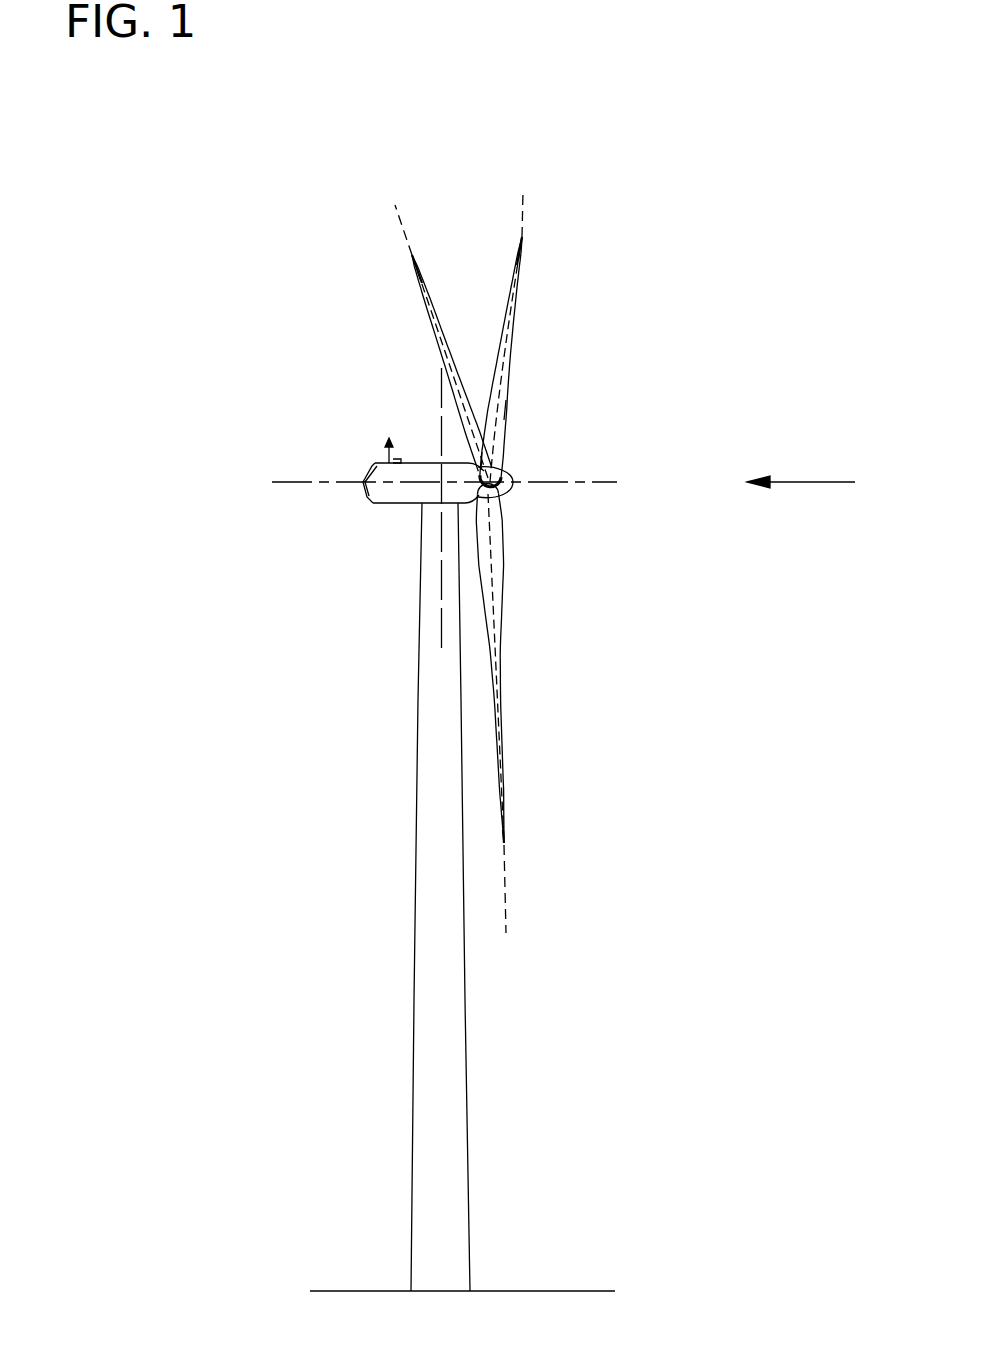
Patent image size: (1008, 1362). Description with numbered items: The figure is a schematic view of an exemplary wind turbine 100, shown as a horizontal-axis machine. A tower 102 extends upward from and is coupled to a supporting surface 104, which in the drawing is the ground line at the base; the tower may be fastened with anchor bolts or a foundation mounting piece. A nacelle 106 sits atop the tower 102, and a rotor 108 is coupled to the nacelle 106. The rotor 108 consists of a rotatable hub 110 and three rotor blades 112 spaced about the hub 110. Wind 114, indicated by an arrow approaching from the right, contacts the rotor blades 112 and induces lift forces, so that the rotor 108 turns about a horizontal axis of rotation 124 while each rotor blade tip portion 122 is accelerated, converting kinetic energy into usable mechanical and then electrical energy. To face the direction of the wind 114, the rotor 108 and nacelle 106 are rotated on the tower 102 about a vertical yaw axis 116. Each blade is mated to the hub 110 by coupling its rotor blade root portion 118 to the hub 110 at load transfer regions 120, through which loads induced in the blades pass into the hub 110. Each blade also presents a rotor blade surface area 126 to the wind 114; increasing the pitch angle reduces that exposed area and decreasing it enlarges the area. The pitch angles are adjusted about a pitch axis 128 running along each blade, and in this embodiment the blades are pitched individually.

The wind turbine 100 is at (195, 267).
The tower 102 is at (414, 1057).
The supporting surface 104 is at (368, 1291).
The nacelle 106 is at (392, 503).
The rotor 108 is at (525, 375).
The rotatable hub 110 is at (503, 473).
The rotor blades 112 is at (445, 355).
The wind 114 is at (823, 482).
The yaw axis 116 is at (437, 408).
The rotor blade root portion 118 is at (497, 560).
The load transfer regions 120 is at (493, 467).
The rotor blade tip portion 122 is at (413, 268).
The axis of rotation 124 is at (578, 483).
The rotor blade surface area 126 is at (505, 420).
The pitch axis 128 is at (398, 212).